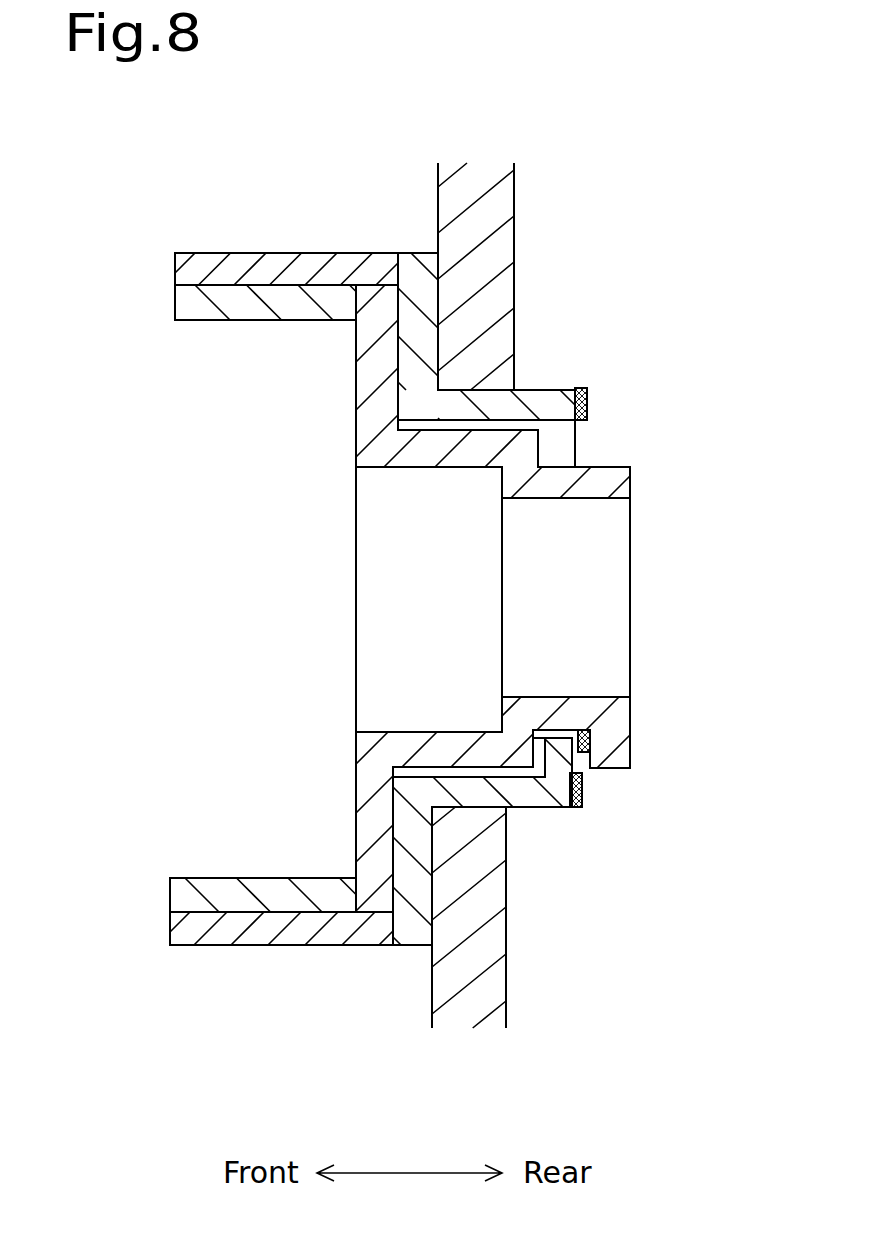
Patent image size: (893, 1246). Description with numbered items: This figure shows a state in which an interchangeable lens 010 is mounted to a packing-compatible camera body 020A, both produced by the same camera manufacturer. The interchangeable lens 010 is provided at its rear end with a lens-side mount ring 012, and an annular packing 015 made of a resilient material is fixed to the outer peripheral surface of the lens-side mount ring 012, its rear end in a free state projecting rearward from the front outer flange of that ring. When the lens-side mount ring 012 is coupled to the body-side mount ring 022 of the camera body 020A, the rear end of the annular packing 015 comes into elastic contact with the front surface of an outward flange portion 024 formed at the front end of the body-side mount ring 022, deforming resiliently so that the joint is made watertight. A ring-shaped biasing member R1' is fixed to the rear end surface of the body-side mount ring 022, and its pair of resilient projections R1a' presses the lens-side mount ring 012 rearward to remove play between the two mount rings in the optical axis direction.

The interchangeable lens 010 is at (163, 212).
The camera body 020A is at (428, 172).
The body-side mount ring 022 is at (574, 390).
The outward flange portion 024 is at (415, 359).
The lens-side mount ring 012 is at (508, 808).
The annular packing 015 is at (277, 932).
The resilient projections R1a' is at (665, 709).
The ring-shaped biasing member R1' is at (642, 826).